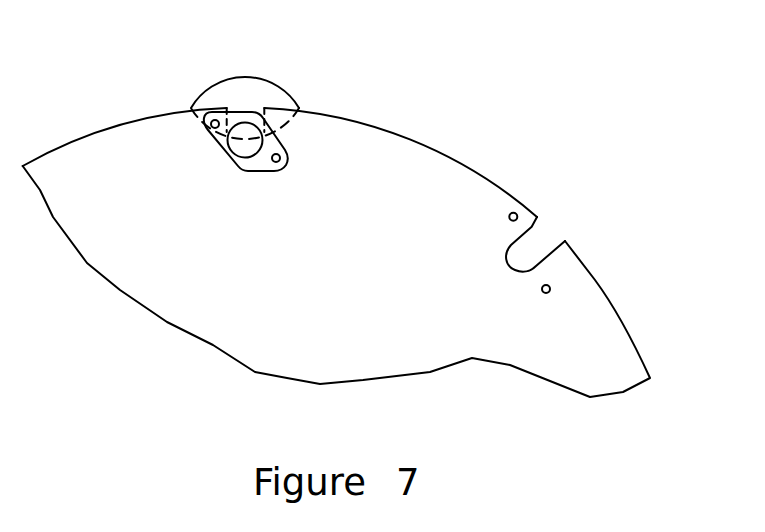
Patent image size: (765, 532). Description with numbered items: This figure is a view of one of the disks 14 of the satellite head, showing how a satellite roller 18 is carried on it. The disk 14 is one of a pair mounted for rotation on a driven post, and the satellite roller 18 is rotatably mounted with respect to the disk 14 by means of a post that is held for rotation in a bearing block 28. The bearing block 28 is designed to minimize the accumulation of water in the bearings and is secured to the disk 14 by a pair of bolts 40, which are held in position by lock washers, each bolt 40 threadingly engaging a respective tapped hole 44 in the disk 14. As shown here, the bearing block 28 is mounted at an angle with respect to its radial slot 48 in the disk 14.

The disk 14 is at (418, 142).
The satellite roller 18 is at (297, 97).
The bearing block 28 is at (218, 150).
The bolt 40 is at (211, 123).
The tapped hole 44 is at (550, 288).
The radial slot 48 is at (533, 227).